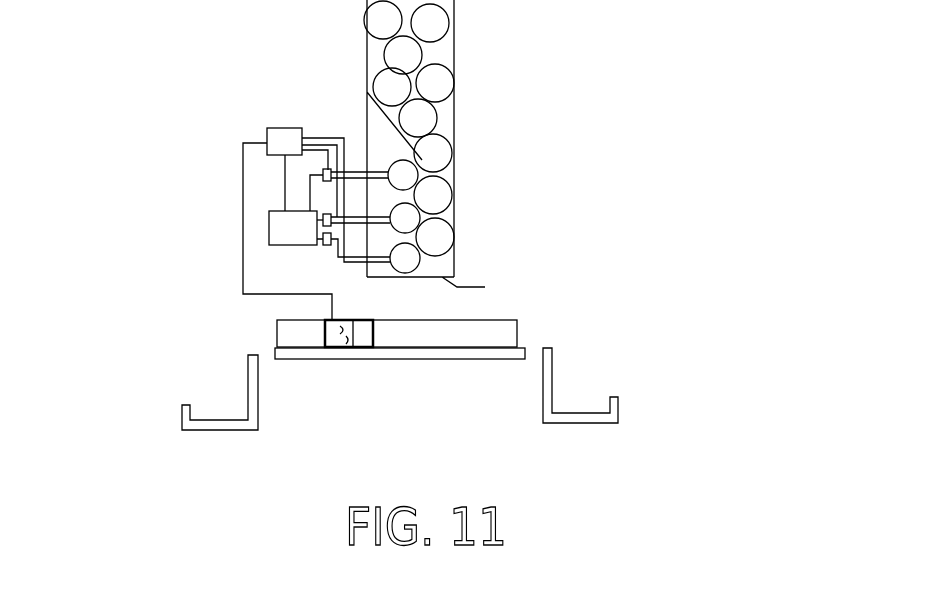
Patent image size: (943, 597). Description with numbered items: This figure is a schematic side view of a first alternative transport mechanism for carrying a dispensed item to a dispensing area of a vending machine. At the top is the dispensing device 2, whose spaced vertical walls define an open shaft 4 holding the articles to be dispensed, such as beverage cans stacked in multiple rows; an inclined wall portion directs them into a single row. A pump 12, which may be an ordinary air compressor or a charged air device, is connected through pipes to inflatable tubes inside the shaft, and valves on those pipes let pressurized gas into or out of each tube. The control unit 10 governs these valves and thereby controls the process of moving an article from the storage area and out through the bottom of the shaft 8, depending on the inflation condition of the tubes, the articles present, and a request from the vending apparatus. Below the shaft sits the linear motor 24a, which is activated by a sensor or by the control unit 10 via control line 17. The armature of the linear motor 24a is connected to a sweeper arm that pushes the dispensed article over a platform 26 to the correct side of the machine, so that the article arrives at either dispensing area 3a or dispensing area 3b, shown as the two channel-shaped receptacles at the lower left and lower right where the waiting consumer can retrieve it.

The dispensing device 2 is at (328, 73).
The open shaft 4 is at (438, 53).
The bottom of the shaft 8 is at (485, 287).
The control unit 10 is at (284, 139).
The pump 12 is at (278, 232).
The control line 17 is at (242, 273).
The linear motor 24a is at (362, 333).
The platform 26 is at (355, 350).
The dispensing area 3a is at (213, 390).
The dispensing area 3b is at (582, 375).